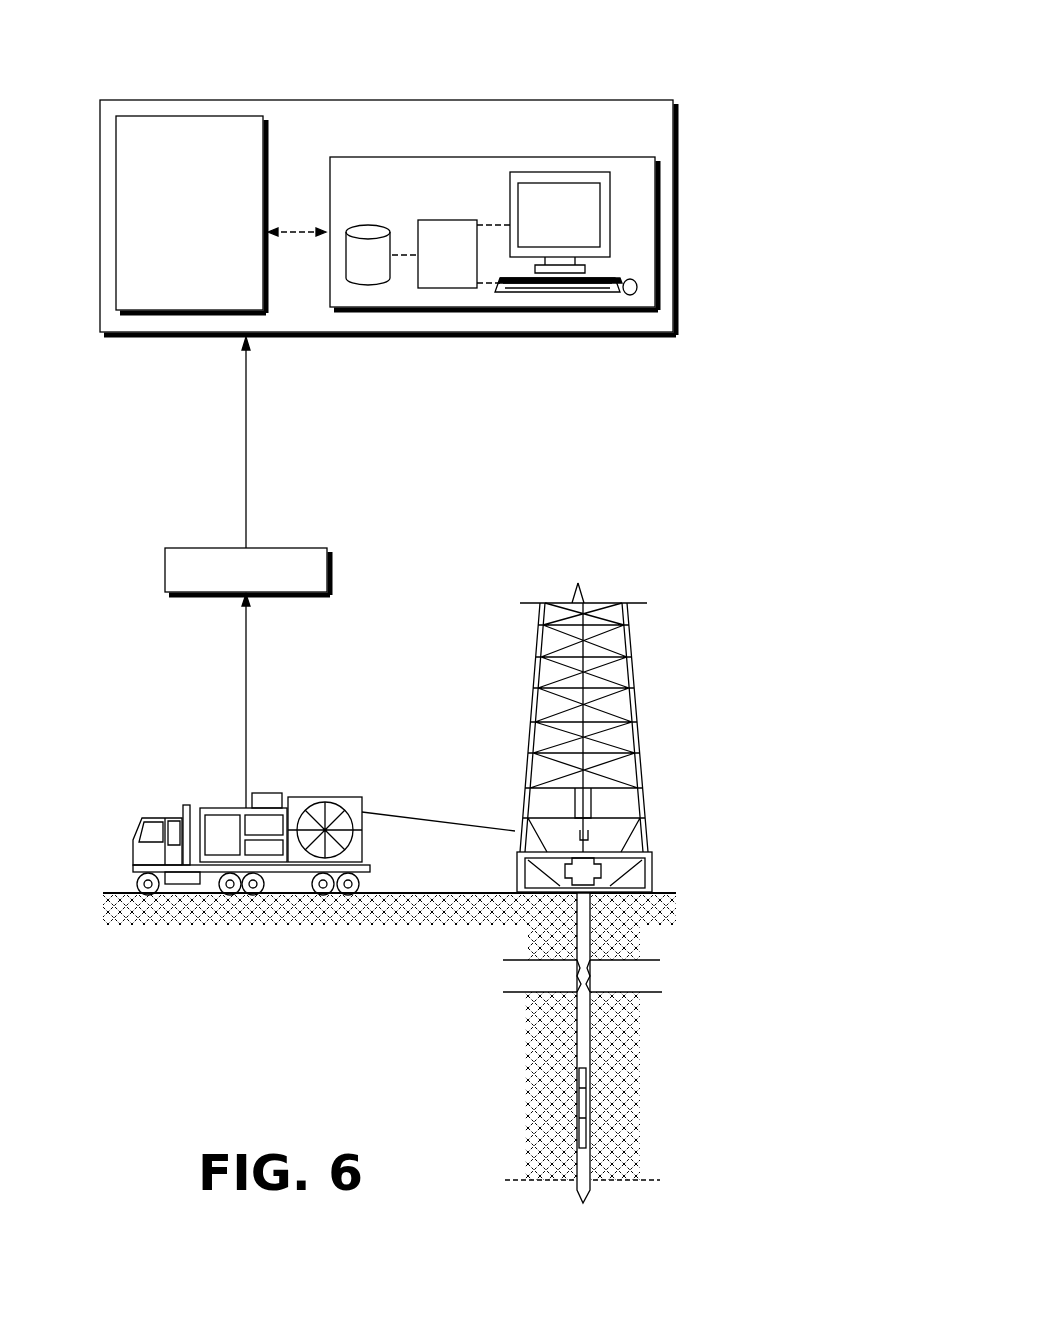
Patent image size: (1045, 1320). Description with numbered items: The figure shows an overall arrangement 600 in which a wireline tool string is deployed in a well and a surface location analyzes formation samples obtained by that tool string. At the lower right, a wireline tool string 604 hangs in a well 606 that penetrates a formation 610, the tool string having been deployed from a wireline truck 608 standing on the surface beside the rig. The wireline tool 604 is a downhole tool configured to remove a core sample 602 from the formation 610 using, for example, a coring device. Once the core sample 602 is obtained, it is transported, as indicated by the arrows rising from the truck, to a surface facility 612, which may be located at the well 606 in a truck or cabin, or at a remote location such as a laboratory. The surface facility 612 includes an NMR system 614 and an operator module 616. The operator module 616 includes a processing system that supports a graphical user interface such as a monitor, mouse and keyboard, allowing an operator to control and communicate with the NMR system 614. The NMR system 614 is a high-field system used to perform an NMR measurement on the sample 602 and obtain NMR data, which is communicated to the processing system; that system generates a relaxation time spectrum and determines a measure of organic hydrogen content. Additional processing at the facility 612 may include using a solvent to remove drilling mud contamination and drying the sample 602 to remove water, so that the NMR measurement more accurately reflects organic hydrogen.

The system 600 is at (722, 58).
The core sample 602 is at (163, 571).
The wireline tool string 604 is at (580, 1102).
The well 606 is at (576, 1045).
The wireline truck 608 is at (125, 858).
The formation 610 is at (395, 933).
The surface facility 612 is at (392, 100).
The NMR system 614 is at (200, 114).
The operator module 616 is at (622, 155).